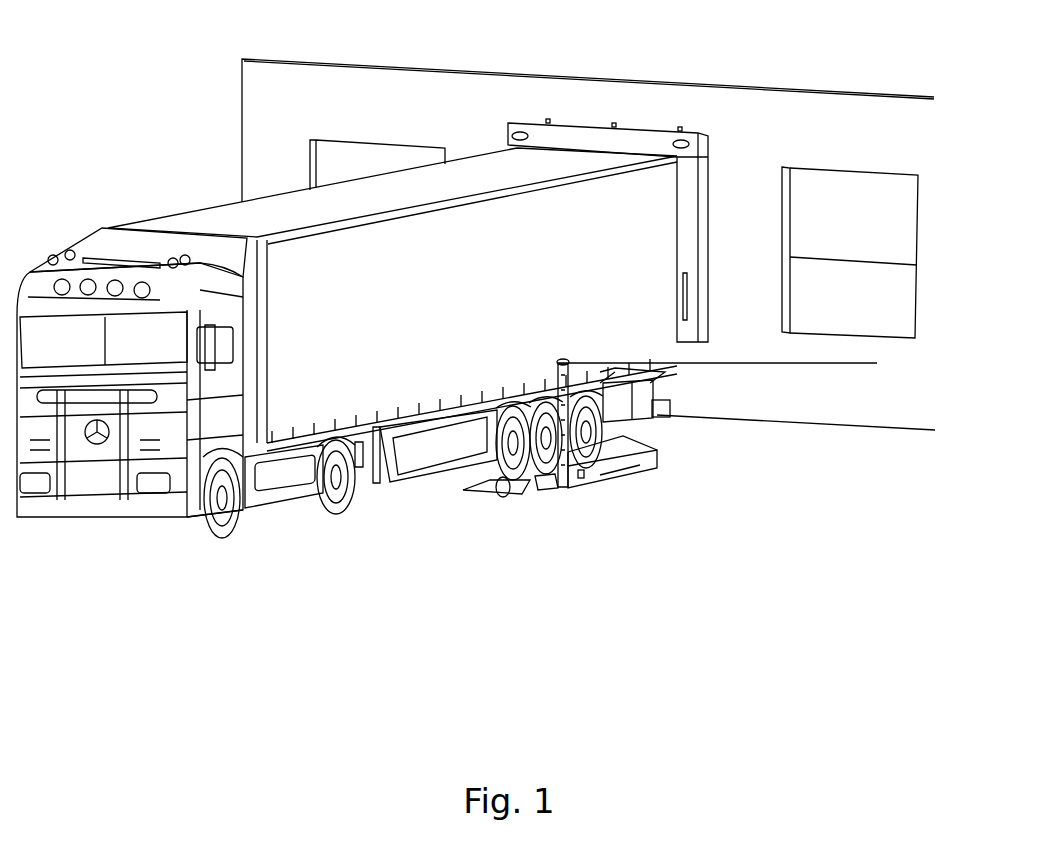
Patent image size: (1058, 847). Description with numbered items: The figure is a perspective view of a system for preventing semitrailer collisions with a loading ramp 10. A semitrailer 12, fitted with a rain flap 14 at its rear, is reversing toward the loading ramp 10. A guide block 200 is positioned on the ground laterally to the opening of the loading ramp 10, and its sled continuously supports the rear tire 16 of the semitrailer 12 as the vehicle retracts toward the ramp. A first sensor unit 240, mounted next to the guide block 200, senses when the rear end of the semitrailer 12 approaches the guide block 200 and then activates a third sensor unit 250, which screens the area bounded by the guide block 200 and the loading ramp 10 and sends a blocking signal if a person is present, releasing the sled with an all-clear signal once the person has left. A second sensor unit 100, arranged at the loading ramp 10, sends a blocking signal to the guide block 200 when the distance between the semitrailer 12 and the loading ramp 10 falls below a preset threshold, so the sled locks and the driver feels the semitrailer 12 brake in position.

The loading ramp 10 is at (570, 130).
The second sensor unit 100 is at (516, 130).
The semitrailer 12 is at (242, 213).
The rain flap 14 is at (607, 404).
The rear tire 16 is at (643, 439).
The guide block 200 is at (633, 473).
The first sensor unit 240 is at (565, 484).
The third sensor unit 250 is at (738, 362).